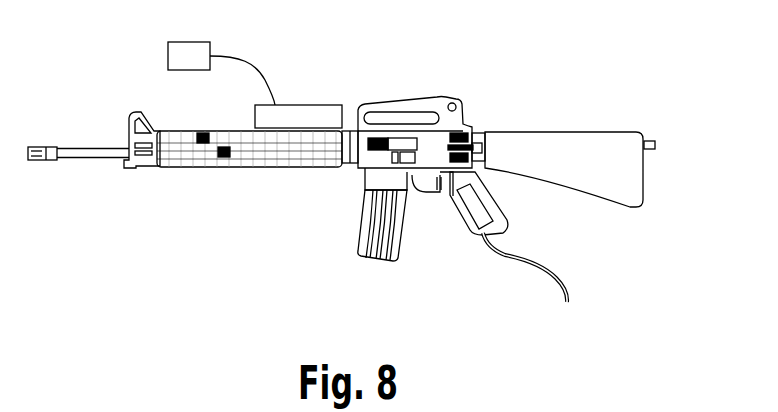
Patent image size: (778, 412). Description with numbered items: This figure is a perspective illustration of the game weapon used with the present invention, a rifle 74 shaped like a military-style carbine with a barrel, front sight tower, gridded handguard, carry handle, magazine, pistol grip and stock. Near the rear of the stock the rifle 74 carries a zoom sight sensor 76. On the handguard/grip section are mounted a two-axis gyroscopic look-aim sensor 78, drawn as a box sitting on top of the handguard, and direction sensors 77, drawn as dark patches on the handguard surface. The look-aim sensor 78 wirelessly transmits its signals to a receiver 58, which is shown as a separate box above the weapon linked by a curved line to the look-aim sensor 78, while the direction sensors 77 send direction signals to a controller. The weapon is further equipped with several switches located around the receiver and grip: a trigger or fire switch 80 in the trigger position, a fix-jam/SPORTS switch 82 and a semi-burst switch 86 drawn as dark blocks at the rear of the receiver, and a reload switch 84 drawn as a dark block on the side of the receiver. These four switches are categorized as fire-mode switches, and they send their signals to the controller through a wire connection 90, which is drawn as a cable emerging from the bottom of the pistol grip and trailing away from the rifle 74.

The rifle 74 is at (597, 214).
The receiver 58 is at (168, 56).
The two-axis gyroscopic look-aim sensor 78 is at (317, 112).
The direction sensors 77 is at (202, 157).
The reload switch 84 is at (370, 148).
The fix-jam/SPORTS switch 82 is at (462, 135).
The semi-burst switch 86 is at (468, 162).
The zoom sight sensor 76 is at (651, 142).
The fire switch 80 is at (435, 186).
The wire connection 90 is at (547, 270).